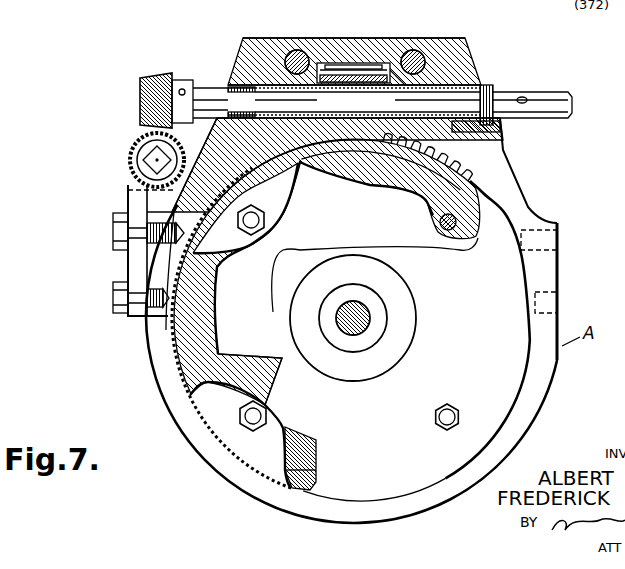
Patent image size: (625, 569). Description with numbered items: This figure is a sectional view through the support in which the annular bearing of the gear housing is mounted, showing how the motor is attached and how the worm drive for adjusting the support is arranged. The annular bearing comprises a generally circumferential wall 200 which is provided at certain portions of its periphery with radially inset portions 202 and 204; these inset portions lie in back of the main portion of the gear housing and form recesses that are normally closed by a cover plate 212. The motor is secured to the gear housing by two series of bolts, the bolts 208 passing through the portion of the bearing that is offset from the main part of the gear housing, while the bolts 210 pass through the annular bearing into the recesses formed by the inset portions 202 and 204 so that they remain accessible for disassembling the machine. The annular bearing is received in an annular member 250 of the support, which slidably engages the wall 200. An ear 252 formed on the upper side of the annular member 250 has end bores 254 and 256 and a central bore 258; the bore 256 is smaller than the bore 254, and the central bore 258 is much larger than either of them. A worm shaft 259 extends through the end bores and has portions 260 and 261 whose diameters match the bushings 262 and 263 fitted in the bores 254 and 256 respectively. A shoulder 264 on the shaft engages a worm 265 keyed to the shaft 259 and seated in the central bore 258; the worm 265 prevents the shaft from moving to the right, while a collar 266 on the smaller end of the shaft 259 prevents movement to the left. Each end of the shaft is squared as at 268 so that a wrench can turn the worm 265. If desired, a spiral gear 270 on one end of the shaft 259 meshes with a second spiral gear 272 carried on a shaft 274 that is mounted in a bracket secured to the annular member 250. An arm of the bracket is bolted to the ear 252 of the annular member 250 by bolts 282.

The circumferential wall 200 is at (293, 217).
The radially inset portion 202 is at (243, 253).
The radially inset portion 204 is at (228, 370).
The bolts 208 is at (434, 413).
The bolts 210 is at (300, 403).
The cover plate 212 is at (195, 407).
The annular member 250 is at (465, 57).
The ear 252 is at (258, 45).
The end bore 254 is at (292, 58).
The end bore 256 is at (397, 80).
The central bore 258 is at (357, 63).
The worm shaft 259 is at (310, 90).
The shaft portion 260 is at (286, 102).
The shaft portion 261 is at (367, 102).
The bushing 262 is at (268, 93).
The bushing 263 is at (407, 113).
The shoulder 264 is at (326, 97).
The worm 265 is at (362, 90).
The collar 266 is at (487, 90).
The squared end 268 is at (571, 107).
The spiral gear 270 is at (143, 75).
The second spiral gear 272 is at (130, 150).
The shaft 274 is at (150, 165).
The bolts 282 is at (433, 67).